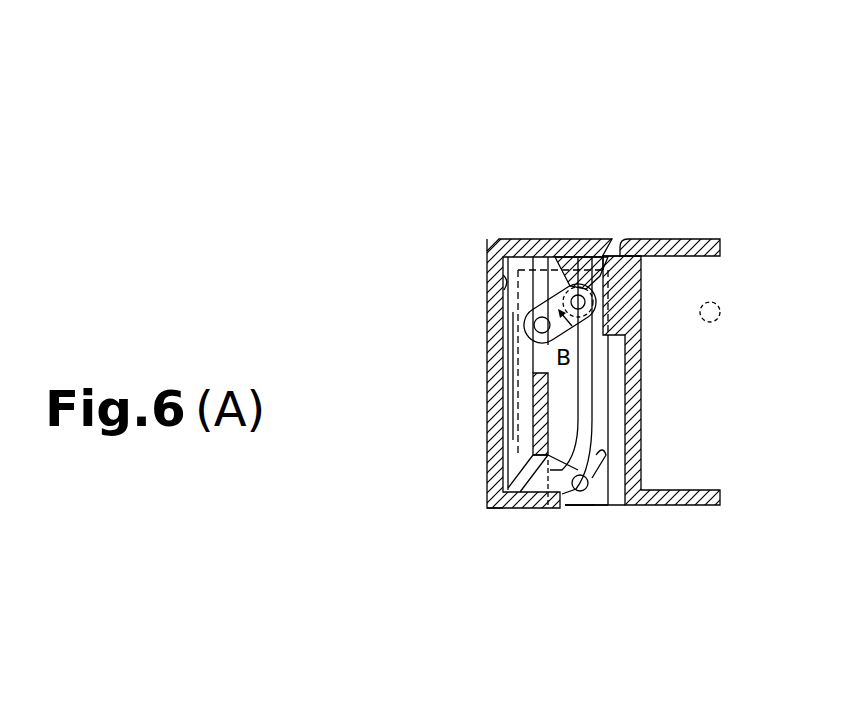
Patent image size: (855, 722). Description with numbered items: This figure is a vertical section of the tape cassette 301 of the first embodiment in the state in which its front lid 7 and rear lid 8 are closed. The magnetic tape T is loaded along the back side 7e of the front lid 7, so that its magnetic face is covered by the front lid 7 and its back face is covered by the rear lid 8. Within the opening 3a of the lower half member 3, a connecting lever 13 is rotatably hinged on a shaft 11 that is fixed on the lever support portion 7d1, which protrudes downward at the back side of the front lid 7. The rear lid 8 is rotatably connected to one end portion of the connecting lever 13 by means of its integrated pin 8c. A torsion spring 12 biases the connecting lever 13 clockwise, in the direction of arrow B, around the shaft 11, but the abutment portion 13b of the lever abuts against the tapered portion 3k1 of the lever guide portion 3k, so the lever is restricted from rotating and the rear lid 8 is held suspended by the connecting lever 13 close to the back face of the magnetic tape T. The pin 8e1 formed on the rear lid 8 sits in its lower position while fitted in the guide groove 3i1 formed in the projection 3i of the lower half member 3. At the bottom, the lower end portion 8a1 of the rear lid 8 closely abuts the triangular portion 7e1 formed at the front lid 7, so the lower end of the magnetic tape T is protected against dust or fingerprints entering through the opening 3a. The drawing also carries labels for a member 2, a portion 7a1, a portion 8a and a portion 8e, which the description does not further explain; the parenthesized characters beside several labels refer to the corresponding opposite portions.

The tape cassette 301 is at (285, 95).
The connecting lever 13 is at (518, 270).
The abutment portion 13b is at (598, 262).
The shaft 11 is at (566, 288).
The torsion spring 12 is at (582, 285).
The front lid 7 is at (497, 432).
The lever support portion 7d1 is at (546, 265).
The back side 7e is at (500, 278).
The triangular portion 7e1 is at (497, 509).
The housing hole 7a1 is at (706, 323).
The magnetic tape T is at (497, 360).
The rear lid 8 is at (526, 405).
The slider end 8a is at (545, 455).
The lower end portion 8a1 is at (533, 509).
The pin 8c is at (534, 324).
The slider projection 8e is at (550, 507).
The pin 8e1 is at (577, 507).
The lower half member 3 is at (684, 515).
The opening 3a is at (606, 514).
The projection 3i is at (578, 398).
The guide groove 3i1 is at (642, 510).
The lever guide portion 3k is at (657, 239).
The tapered portion 3k1 is at (613, 257).
The base plate 2 is at (688, 239).